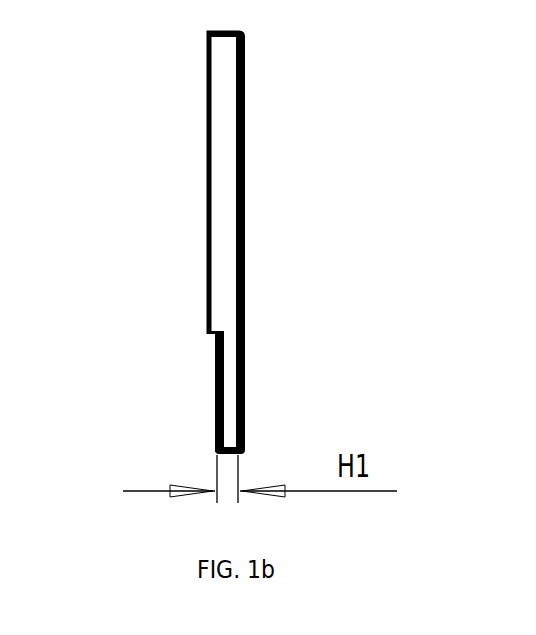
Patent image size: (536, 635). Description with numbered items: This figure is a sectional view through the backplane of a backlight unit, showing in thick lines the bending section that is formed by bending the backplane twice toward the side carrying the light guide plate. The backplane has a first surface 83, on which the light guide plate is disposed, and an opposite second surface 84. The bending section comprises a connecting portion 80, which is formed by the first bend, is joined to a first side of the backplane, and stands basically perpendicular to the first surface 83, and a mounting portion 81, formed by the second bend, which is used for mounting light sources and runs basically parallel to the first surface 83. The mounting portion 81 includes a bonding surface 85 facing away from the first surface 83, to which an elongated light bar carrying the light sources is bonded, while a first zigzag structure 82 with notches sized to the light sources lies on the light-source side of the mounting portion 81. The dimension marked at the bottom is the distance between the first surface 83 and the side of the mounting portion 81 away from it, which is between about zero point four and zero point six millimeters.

The connecting portion 80 is at (245, 453).
The mounting portion 81 is at (148, 393).
The first zigzag structure 82 is at (215, 395).
The first surface 83 is at (237, 210).
The second surface 84 is at (245, 145).
The bonding surface 85 is at (215, 360).